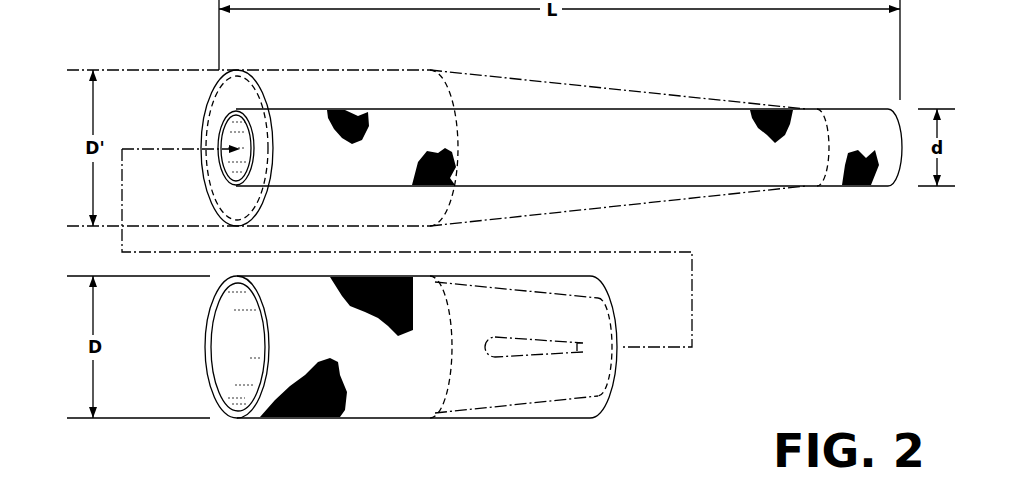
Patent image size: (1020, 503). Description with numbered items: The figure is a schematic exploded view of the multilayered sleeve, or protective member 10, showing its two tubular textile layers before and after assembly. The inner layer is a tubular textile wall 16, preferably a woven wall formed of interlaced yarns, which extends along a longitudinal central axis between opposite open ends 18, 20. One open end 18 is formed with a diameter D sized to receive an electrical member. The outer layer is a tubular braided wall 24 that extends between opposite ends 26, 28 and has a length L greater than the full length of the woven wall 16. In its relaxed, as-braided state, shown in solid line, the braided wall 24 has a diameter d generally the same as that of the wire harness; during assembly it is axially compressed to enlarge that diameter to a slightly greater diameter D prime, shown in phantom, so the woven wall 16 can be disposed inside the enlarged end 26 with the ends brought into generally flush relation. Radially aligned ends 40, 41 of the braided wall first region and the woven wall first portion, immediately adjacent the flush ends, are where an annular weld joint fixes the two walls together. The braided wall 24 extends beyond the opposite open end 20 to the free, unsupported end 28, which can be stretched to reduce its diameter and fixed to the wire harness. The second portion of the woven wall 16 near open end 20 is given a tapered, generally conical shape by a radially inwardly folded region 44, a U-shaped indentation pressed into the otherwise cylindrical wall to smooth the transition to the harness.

The protective member 10 is at (820, 64).
The tubular textile wall 16 is at (357, 413).
The open end 18 is at (232, 415).
The open end 20 is at (605, 402).
The tubular braided wall 24 is at (390, 70).
The end of braided wall 26 is at (201, 76).
The free end of braided wall 28 is at (900, 115).
The radially aligned end of first region 40 is at (203, 135).
The radially aligned end of first portion 41 is at (207, 341).
The radially inwardly folded region 44 is at (628, 354).